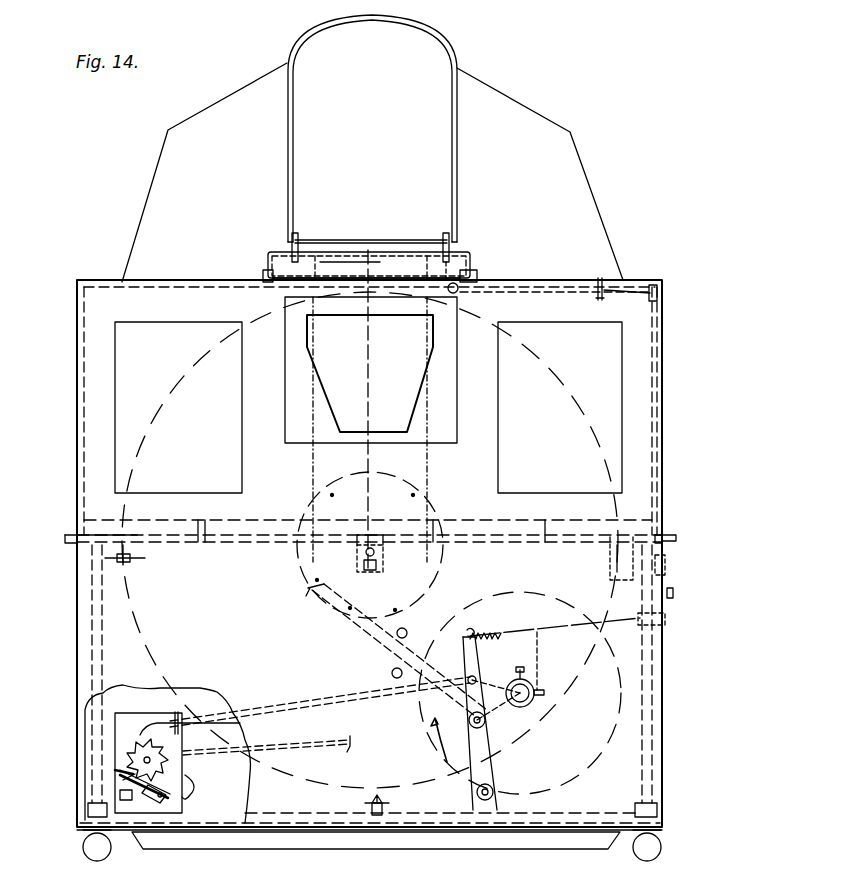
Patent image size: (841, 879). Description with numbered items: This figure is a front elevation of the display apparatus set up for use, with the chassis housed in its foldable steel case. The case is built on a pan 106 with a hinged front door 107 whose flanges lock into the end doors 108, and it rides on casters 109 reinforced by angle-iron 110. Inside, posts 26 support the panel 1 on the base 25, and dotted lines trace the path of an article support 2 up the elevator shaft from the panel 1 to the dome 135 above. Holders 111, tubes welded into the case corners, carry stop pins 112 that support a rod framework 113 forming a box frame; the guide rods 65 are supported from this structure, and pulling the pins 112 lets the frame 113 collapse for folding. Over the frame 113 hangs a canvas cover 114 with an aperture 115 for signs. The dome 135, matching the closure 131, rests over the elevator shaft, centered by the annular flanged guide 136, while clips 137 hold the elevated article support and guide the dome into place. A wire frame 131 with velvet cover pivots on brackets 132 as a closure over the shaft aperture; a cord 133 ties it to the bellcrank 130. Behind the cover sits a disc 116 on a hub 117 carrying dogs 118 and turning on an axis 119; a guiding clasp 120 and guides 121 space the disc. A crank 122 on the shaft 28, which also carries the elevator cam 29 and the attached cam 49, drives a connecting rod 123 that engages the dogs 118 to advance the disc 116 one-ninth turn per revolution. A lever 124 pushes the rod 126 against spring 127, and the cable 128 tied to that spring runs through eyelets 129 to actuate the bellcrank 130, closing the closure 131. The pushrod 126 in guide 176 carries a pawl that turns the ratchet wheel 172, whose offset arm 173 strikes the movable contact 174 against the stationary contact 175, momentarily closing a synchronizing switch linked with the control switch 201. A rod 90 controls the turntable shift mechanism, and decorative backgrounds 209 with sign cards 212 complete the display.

The decorative background 209 is at (588, 180).
The wire frame closure 131 is at (457, 175).
The brackets 132 is at (447, 233).
The dome 135 is at (472, 263).
The annular flanged guide 136 is at (478, 273).
The clips 137 is at (320, 259).
The cord or cable 133 is at (456, 291).
The bellcrank 130 is at (594, 293).
The eyelets 129 is at (658, 293).
The canvas cover 114 is at (178, 394).
The sign cards 212 is at (211, 321).
The disc 116 is at (236, 330).
The guide rods 65 is at (372, 338).
The aperture 115 is at (425, 377).
The rod framework 113 is at (664, 383).
The cord or cable 128 is at (655, 410).
The hub 117 is at (425, 500).
The article support 2 is at (580, 525).
The panel 1 is at (570, 540).
The dogs 118 is at (418, 578).
The axis 119 is at (378, 572).
The guiding clasp 120 is at (610, 560).
The guides 121 is at (130, 562).
The holders 111 is at (668, 570).
The stop pins 112 is at (674, 594).
The end doors 108 is at (78, 650).
The posts 26 is at (94, 630).
The front door 107 is at (167, 744).
The guide 176 is at (182, 712).
The ratchet wheel 172 is at (150, 742).
The offset arm 173 is at (115, 762).
The movable contact 174 is at (118, 782).
The control switch 201 is at (182, 768).
The stationary contact 175 is at (176, 789).
The pushrod 126 is at (362, 690).
The rod 90 is at (326, 740).
The connecting rod 123 is at (366, 641).
The spring 127 is at (483, 640).
The lever 124 is at (480, 779).
The crank 122 is at (488, 724).
The shaft 28 is at (510, 708).
The elevator cam 29 is at (622, 700).
The cam 49 is at (612, 710).
The base 25 is at (565, 815).
The angle-iron 110 is at (490, 852).
The casters 109 is at (661, 850).
The pan 106 is at (603, 828).